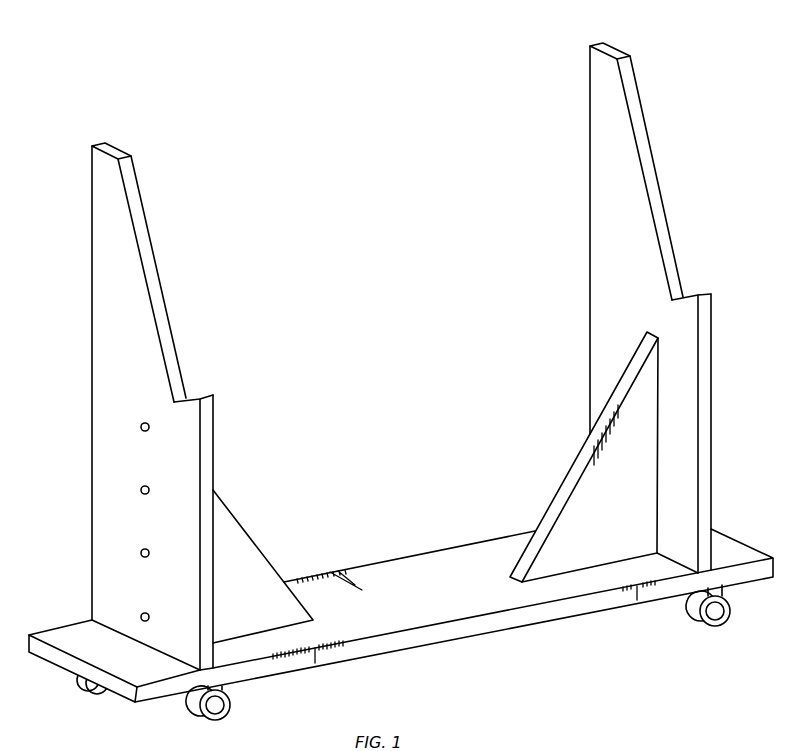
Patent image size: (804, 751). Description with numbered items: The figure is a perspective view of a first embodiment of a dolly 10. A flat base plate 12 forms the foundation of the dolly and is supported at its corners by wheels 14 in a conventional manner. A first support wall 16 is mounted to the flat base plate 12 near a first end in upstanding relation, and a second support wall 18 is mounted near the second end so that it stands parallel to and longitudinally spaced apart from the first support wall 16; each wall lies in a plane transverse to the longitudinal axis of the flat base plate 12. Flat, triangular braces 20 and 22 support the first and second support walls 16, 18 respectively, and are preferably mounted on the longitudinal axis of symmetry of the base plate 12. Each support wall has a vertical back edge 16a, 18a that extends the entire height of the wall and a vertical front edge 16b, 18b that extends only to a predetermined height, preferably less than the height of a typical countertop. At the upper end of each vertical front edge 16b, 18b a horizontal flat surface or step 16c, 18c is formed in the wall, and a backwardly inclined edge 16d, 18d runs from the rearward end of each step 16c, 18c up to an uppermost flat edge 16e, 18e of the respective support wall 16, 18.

The dolly 10 is at (702, 59).
The flat base plate 12 is at (415, 571).
The wheels 14 is at (84, 686).
The first support wall 16 is at (151, 400).
The vertical back edge 16a is at (92, 390).
The vertical front edge 16b is at (207, 590).
The step 16c is at (197, 396).
The backwardly inclined edge 16d is at (150, 260).
The uppermost flat edge 16e is at (117, 148).
The second support wall 18 is at (647, 300).
The vertical back edge 18a is at (590, 243).
The vertical front edge 18b is at (706, 425).
The step 18c is at (699, 294).
The backwardly inclined edge 18d is at (655, 192).
The uppermost flat edge 18e is at (617, 48).
The flat triangular brace 20 is at (238, 523).
The flat triangular brace 22 is at (582, 457).